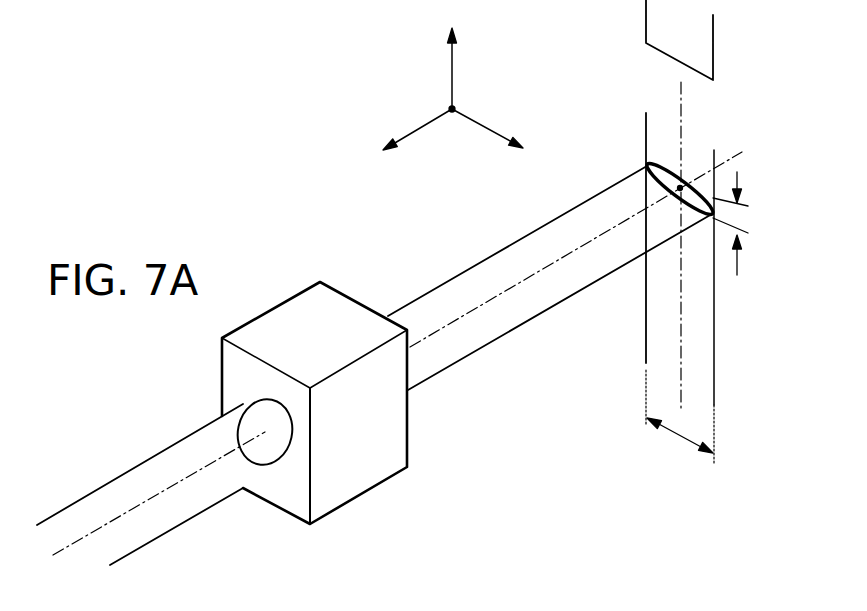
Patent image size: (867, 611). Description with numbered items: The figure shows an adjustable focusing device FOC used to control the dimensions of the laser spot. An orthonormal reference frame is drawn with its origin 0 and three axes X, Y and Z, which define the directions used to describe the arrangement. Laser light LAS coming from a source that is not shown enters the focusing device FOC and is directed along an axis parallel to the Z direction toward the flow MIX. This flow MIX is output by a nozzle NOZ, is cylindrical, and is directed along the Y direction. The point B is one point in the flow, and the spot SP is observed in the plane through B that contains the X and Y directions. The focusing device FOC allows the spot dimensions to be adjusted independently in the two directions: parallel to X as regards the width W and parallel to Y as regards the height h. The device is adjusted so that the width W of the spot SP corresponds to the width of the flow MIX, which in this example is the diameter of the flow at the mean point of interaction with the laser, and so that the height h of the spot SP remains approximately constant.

The laser light LAS is at (145, 482).
The adjustable focusing device FOC is at (303, 313).
The point in the flow B is at (678, 183).
The nozzle NOZ is at (679, 204).
The flow MIX is at (705, 340).
The spot SP is at (710, 172).
The height of the spot h is at (737, 223).
The width of the spot W is at (680, 443).
The x axis X is at (492, 145).
The y axis Y is at (464, 68).
The z axis Z is at (417, 145).
The origin of the reference frame 0 is at (454, 123).